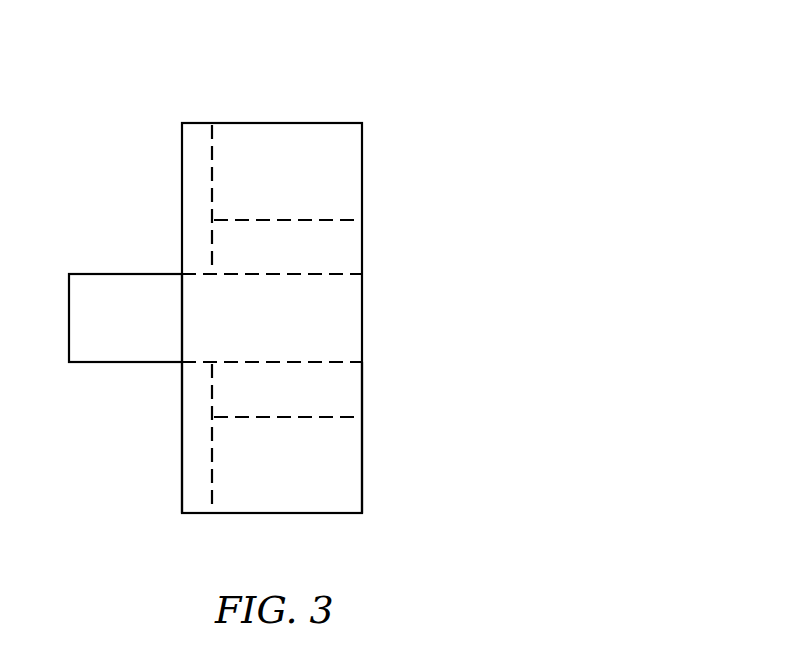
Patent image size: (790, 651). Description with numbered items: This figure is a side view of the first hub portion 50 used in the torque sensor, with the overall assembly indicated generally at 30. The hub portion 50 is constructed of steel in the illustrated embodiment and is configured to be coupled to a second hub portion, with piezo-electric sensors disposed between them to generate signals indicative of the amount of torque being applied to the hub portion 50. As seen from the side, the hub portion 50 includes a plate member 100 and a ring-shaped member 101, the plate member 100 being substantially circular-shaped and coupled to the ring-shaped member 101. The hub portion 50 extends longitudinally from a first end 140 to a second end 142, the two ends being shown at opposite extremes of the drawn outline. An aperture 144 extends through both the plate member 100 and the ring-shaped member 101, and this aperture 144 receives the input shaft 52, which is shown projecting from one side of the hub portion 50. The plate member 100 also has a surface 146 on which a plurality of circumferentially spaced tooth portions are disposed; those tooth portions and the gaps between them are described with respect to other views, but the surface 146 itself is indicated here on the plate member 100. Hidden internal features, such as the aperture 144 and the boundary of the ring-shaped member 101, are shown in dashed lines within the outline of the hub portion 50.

The nozzle assembly 30 is at (297, 67).
The hub portion 50 is at (312, 121).
The input shaft 52 is at (131, 273).
The plate member 100 is at (197, 121).
The ring-shaped member 101 is at (341, 247).
The first end 140 is at (181, 458).
The second end 142 is at (363, 465).
The aperture 144 is at (338, 372).
The surface 146 is at (214, 495).